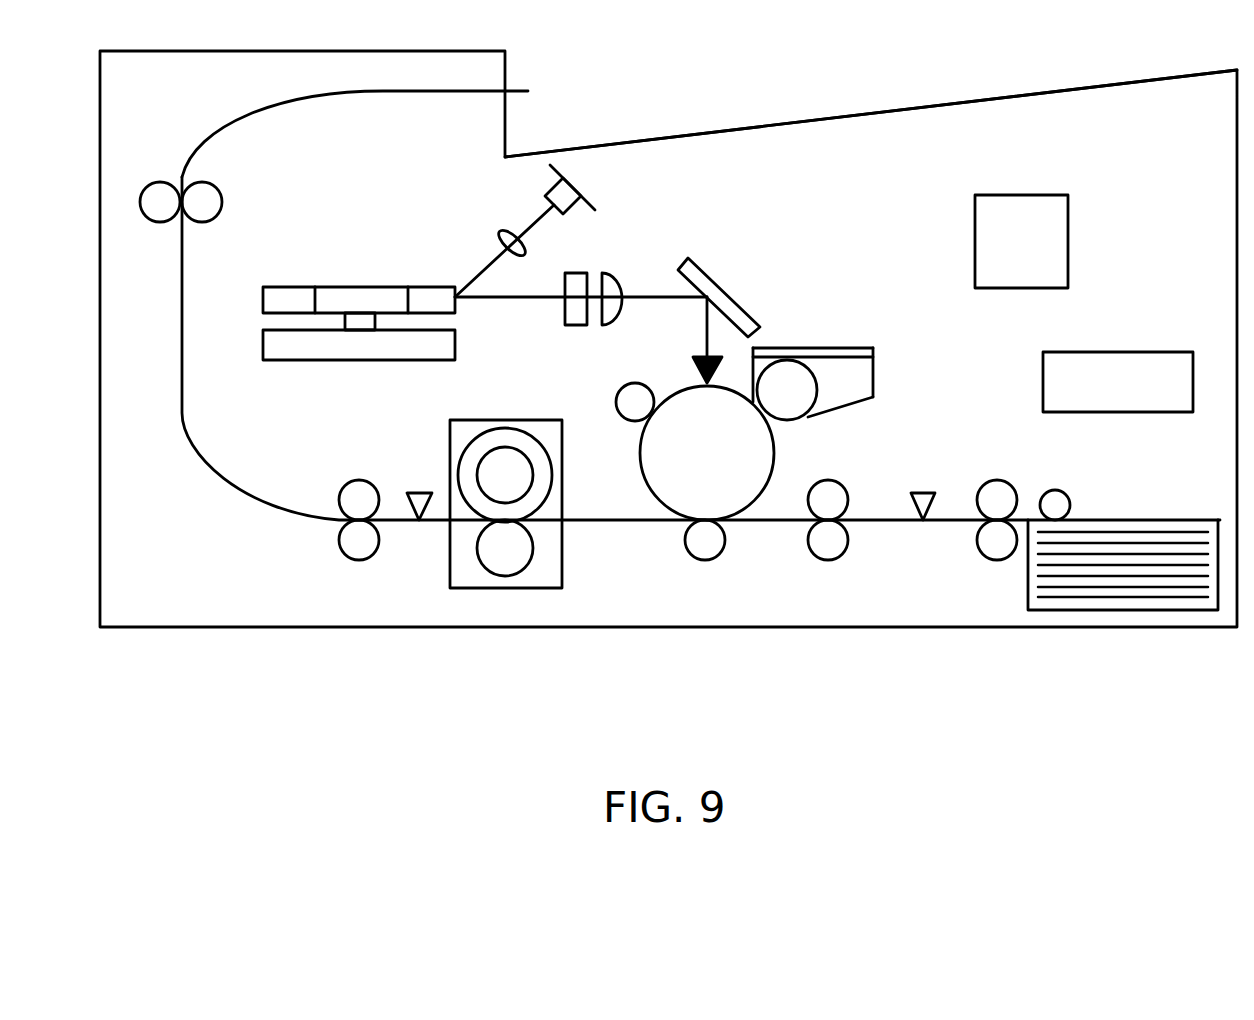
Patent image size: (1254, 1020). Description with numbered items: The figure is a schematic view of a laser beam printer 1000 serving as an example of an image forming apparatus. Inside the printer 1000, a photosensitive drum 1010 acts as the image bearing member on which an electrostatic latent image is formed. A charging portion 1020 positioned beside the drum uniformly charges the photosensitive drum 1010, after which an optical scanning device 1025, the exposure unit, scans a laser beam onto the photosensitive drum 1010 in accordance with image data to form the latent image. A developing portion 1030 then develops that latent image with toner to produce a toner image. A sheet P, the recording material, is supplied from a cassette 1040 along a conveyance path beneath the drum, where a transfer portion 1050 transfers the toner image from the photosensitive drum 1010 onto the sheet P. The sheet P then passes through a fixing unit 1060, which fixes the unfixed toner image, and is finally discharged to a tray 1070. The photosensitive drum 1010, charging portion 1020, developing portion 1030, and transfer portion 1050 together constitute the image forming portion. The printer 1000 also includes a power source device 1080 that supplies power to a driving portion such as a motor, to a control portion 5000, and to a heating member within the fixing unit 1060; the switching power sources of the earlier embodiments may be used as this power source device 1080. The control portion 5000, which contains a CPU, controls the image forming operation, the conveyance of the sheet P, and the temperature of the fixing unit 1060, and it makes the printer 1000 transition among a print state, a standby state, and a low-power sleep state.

The laser beam printer 1000 is at (670, 627).
The photosensitive drum 1010 is at (638, 453).
The charging portion 1020 is at (617, 392).
The optical scanning device 1025 is at (287, 286).
The developing portion 1030 is at (875, 358).
The cassette 1040 is at (1195, 502).
The transfer portion 1050 is at (692, 558).
The fixing unit 1060 is at (448, 566).
The tray 1070 is at (687, 133).
The power source device 1080 is at (1110, 352).
The control portion 5000 is at (1068, 250).
The sheet P is at (1082, 600).